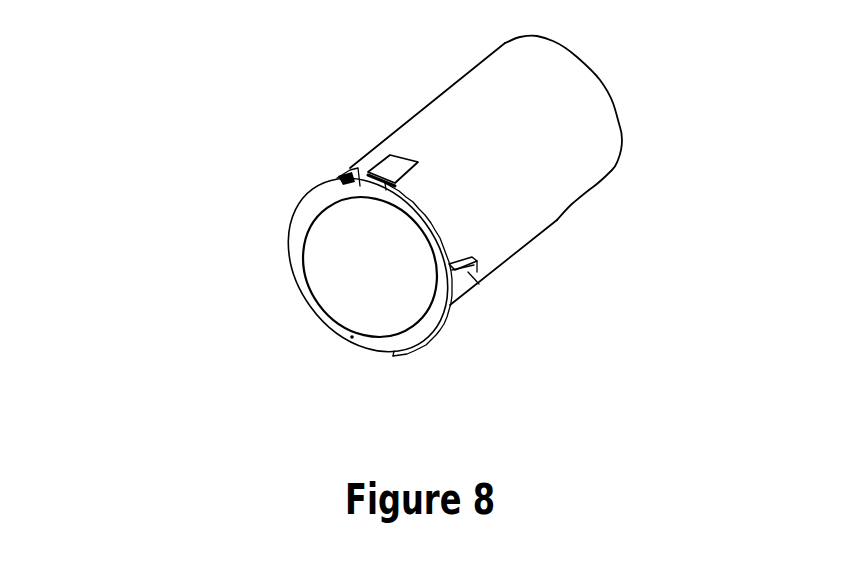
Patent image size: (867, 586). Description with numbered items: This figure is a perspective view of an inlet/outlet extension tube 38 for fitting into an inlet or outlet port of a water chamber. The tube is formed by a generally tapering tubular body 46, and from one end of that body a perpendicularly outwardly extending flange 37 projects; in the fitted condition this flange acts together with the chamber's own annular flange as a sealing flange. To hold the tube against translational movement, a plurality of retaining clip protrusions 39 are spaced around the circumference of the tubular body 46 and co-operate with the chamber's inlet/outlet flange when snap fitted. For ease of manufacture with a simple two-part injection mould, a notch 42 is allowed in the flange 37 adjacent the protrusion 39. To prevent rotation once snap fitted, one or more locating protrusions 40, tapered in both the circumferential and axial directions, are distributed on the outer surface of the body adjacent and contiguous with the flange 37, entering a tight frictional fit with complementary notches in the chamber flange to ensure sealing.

The flange 37 is at (433, 242).
The inlet/outlet extension tube 38 is at (226, 308).
The retaining clip protrusion 39 is at (393, 163).
The locating protrusion 40 is at (480, 270).
The notch 42 is at (350, 173).
The tubular body 46 is at (571, 137).